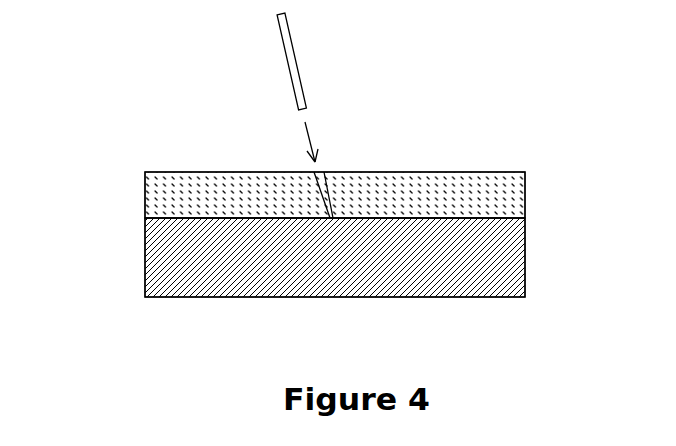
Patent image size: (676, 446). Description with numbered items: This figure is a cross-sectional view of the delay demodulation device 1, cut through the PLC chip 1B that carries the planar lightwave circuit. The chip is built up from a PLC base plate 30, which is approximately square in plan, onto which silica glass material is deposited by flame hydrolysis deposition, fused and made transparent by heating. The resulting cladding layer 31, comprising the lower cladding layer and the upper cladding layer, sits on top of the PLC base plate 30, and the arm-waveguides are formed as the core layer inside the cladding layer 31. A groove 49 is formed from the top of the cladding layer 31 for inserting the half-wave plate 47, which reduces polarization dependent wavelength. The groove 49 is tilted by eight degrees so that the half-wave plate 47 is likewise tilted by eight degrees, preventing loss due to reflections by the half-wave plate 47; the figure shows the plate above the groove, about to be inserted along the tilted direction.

The delay demodulation device 1 is at (190, 155).
The PLC chip 1B is at (145, 216).
The PLC base plate 30 is at (435, 297).
The cladding layer 31 is at (524, 192).
The half-wave plate 47 is at (297, 69).
The groove 49 is at (330, 188).